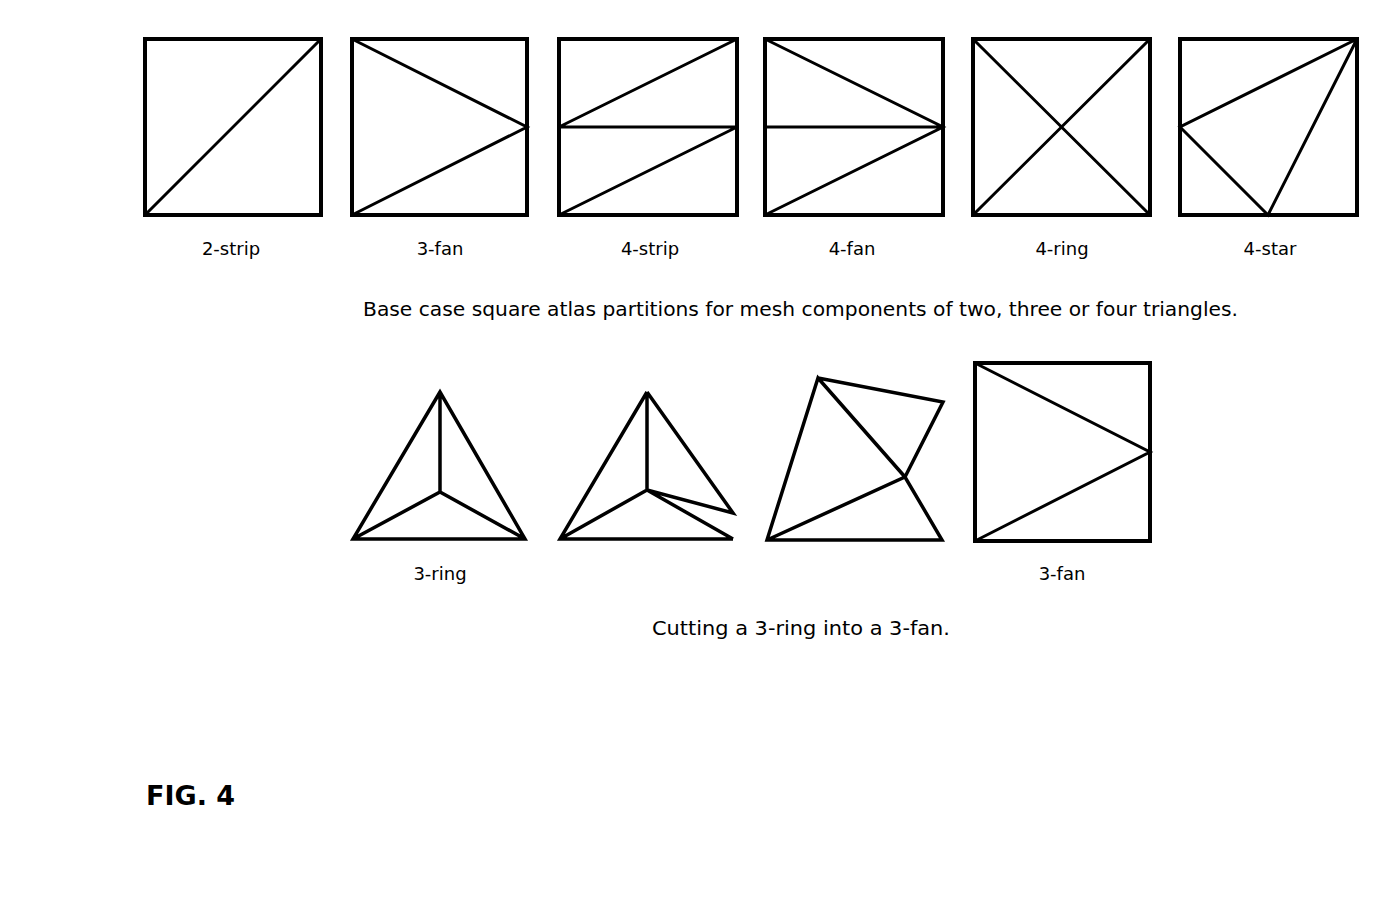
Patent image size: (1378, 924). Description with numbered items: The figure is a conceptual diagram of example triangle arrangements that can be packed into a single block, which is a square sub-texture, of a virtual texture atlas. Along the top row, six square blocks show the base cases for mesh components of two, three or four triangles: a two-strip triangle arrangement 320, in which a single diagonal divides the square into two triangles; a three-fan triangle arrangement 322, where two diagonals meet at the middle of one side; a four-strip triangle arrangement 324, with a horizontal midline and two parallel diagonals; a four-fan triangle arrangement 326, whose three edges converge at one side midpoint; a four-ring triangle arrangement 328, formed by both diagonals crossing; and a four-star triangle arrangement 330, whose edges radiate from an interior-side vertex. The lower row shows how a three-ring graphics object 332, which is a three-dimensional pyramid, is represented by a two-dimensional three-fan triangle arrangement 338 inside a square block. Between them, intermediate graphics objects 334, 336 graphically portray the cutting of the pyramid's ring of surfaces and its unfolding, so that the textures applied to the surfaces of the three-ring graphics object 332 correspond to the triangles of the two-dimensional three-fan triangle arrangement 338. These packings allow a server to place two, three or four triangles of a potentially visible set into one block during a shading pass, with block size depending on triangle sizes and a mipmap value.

The two-strip triangle arrangement 320 is at (223, 37).
The three-fan triangle arrangement 322 is at (427, 37).
The four-strip triangle arrangement 324 is at (644, 37).
The four-fan triangle arrangement 326 is at (836, 37).
The four-ring triangle arrangement 328 is at (1049, 37).
The four-star triangle arrangement 330 is at (1252, 37).
The three-ring graphics object 332 is at (442, 391).
The intermediate graphics object 334 is at (649, 390).
The intermediate graphics object 336 is at (819, 377).
The two-dimensional three-fan triangle arrangement 338 is at (1044, 361).